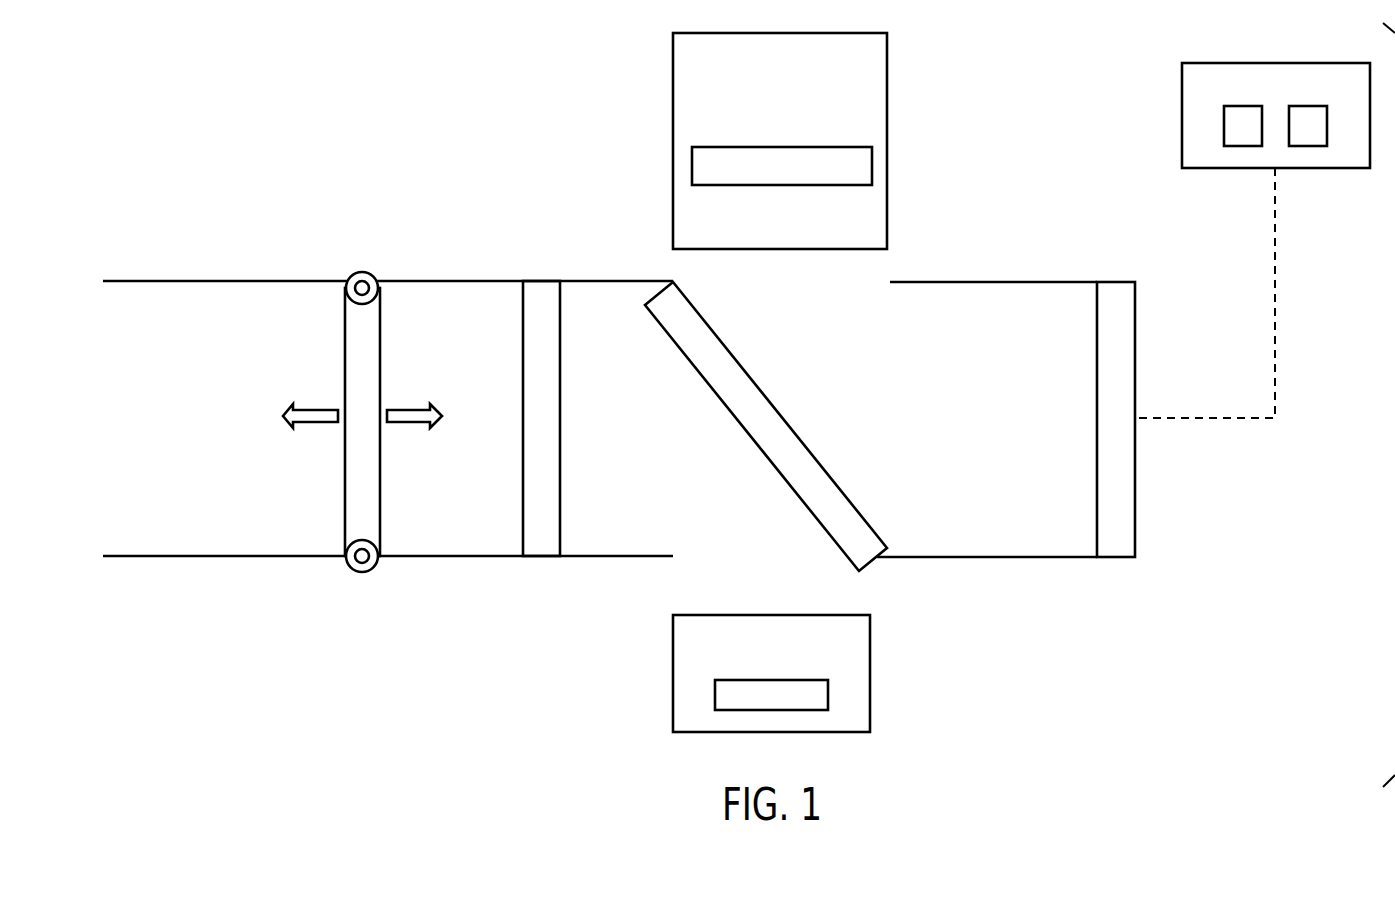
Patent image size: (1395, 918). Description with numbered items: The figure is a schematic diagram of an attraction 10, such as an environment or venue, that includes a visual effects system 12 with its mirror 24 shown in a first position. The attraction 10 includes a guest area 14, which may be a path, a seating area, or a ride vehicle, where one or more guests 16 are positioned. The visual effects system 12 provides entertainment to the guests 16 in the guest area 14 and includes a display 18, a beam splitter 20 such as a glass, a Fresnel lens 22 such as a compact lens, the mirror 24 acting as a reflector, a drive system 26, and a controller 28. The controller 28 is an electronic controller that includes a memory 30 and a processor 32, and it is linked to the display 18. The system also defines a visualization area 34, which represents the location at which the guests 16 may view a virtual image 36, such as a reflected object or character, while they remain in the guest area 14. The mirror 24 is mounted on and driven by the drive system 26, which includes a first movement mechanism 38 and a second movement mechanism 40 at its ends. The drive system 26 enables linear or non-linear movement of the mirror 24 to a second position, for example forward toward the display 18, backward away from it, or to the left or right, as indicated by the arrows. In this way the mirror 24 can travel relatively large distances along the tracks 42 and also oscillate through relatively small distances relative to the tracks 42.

The attraction 10 is at (224, 151).
The visual effects system 12 is at (460, 190).
The guest area 14 is at (765, 615).
The guests 16 is at (715, 690).
The display 18 is at (1135, 313).
The beam splitter 20 is at (683, 357).
The Fresnel lens 22 is at (523, 333).
The mirror 24 is at (345, 338).
The drive system 26 is at (351, 264).
The controller 28 is at (1275, 63).
The memory 30 is at (1238, 146).
The processor 32 is at (1310, 146).
The visualization area 34 is at (673, 45).
The virtual image 36 is at (692, 160).
The first movement mechanism 38 is at (362, 573).
The second movement mechanism 40 is at (369, 274).
The tracks 42 is at (178, 281).